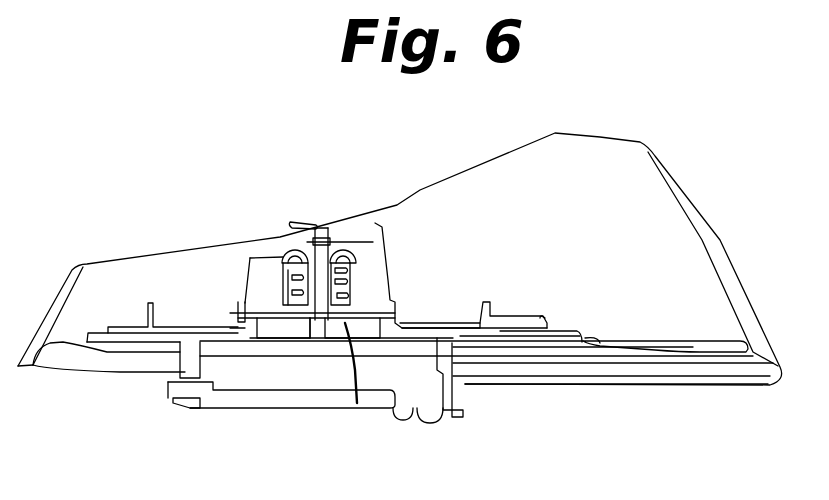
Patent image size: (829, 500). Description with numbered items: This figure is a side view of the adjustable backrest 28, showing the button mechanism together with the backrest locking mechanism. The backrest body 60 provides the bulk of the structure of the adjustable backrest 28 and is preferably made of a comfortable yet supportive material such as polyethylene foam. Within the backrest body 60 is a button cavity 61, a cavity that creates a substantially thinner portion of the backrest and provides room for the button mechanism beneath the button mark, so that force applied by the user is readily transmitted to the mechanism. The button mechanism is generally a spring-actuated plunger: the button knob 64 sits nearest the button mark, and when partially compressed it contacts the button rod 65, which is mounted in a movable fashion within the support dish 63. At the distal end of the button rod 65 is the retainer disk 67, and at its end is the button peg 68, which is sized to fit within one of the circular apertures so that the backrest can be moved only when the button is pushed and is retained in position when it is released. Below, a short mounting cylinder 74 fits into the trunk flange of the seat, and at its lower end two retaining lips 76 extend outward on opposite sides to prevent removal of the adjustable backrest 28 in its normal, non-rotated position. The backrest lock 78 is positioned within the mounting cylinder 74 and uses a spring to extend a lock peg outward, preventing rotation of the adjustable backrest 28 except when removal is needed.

The adjustable backrest 28 is at (710, 125).
The backrest body 60 is at (605, 152).
The button cavity 61 is at (390, 262).
The support dish 63 is at (280, 307).
The button knob 64 is at (343, 245).
The button rod 65 is at (315, 223).
The retainer disk 67 is at (357, 403).
The button peg 68 is at (313, 347).
The mounting cylinder 74 is at (428, 390).
The retaining lips 76 is at (177, 408).
The backrest lock 78 is at (235, 400).